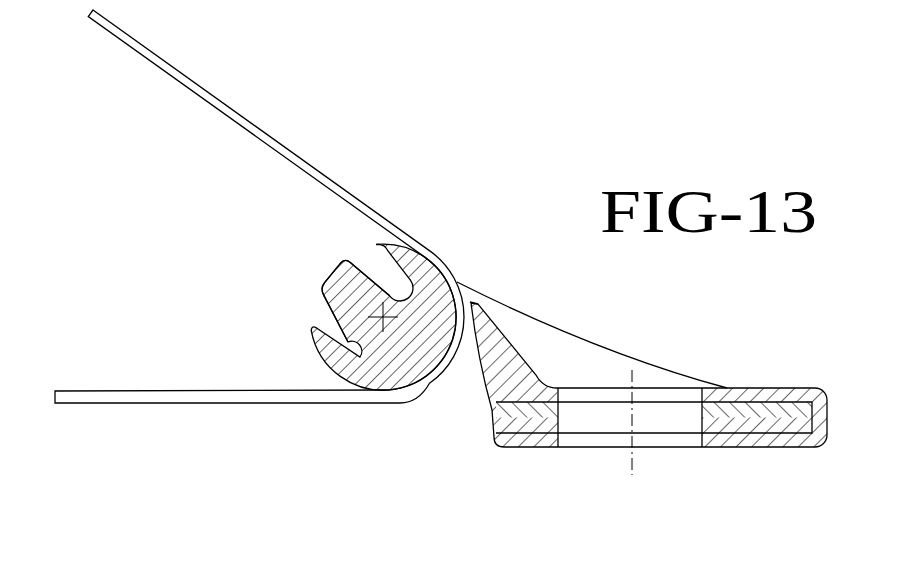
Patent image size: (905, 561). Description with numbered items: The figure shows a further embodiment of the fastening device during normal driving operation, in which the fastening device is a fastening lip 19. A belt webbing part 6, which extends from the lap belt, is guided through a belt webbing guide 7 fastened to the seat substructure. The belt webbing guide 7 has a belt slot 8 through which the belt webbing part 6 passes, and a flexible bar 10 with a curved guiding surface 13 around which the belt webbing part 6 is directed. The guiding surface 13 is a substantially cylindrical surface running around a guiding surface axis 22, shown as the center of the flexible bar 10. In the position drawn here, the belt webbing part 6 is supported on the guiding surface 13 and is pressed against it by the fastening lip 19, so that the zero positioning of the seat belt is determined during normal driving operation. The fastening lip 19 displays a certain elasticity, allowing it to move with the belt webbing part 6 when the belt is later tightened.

The belt webbing part 6 is at (221, 108).
The belt webbing guide 7 is at (547, 348).
The belt slot 8 is at (458, 395).
The flexible bar 10 is at (343, 270).
The guiding surface 13 is at (430, 393).
The fastening lip 19 is at (470, 320).
The guiding surface axis 22 is at (375, 318).